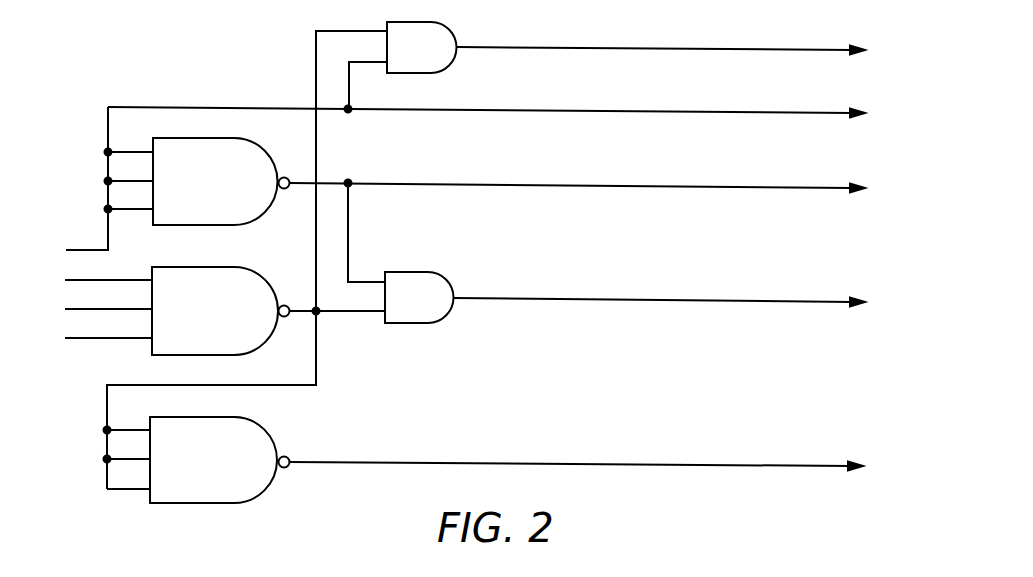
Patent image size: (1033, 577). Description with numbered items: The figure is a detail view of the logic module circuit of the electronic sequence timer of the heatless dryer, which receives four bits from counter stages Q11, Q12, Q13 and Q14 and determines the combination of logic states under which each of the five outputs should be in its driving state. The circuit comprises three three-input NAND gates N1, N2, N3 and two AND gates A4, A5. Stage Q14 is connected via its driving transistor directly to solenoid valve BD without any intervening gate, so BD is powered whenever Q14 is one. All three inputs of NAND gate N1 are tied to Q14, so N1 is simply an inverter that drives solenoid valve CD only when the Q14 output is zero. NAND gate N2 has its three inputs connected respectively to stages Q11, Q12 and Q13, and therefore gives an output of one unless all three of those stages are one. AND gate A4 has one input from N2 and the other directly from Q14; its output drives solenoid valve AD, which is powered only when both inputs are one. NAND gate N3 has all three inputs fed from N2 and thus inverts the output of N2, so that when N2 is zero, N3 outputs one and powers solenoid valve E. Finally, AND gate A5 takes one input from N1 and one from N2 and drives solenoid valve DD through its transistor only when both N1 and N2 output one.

The NAND gate N1 is at (197, 181).
The NAND gate N2 is at (221, 311).
The NAND gate N3 is at (197, 460).
The AND gate A4 is at (282, 255).
The AND gate A5 is at (372, 252).
The counter stage Q11 is at (89, 339).
The counter stage Q12 is at (89, 310).
The counter stage Q13 is at (89, 281).
The counter stage Q14 is at (67, 186).
The solenoid valve AD is at (681, 50).
The solenoid valve BD is at (506, 113).
The solenoid valve CD is at (598, 188).
The solenoid valve DD is at (680, 302).
The solenoid valve E is at (588, 466).